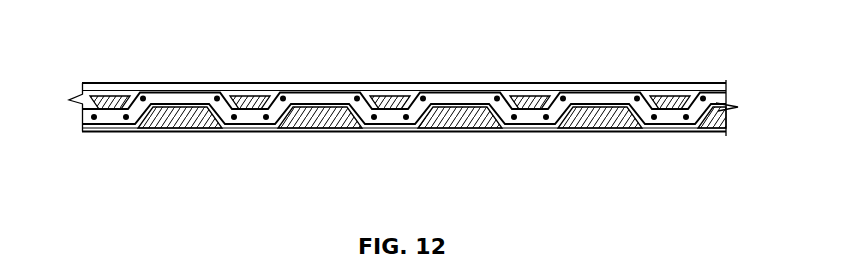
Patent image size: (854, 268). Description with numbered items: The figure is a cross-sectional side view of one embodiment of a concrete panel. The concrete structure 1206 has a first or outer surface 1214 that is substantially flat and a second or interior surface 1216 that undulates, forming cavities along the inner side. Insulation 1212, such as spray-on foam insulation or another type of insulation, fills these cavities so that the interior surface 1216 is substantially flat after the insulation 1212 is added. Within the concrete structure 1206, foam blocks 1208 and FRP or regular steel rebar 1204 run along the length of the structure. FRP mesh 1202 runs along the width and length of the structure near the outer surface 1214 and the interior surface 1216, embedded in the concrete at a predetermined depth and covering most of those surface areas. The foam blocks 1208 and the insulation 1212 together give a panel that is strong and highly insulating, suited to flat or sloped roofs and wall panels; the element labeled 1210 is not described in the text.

The FRP mesh 1202 is at (186, 90).
The rebar 1204 is at (357, 96).
The concrete structure 1206 is at (481, 95).
The foam blocks 1208 is at (672, 101).
The corrugated core 1210 is at (390, 113).
The insulation 1212 is at (598, 116).
The outer surface 1214 is at (110, 83).
The interior surface 1216 is at (112, 132).